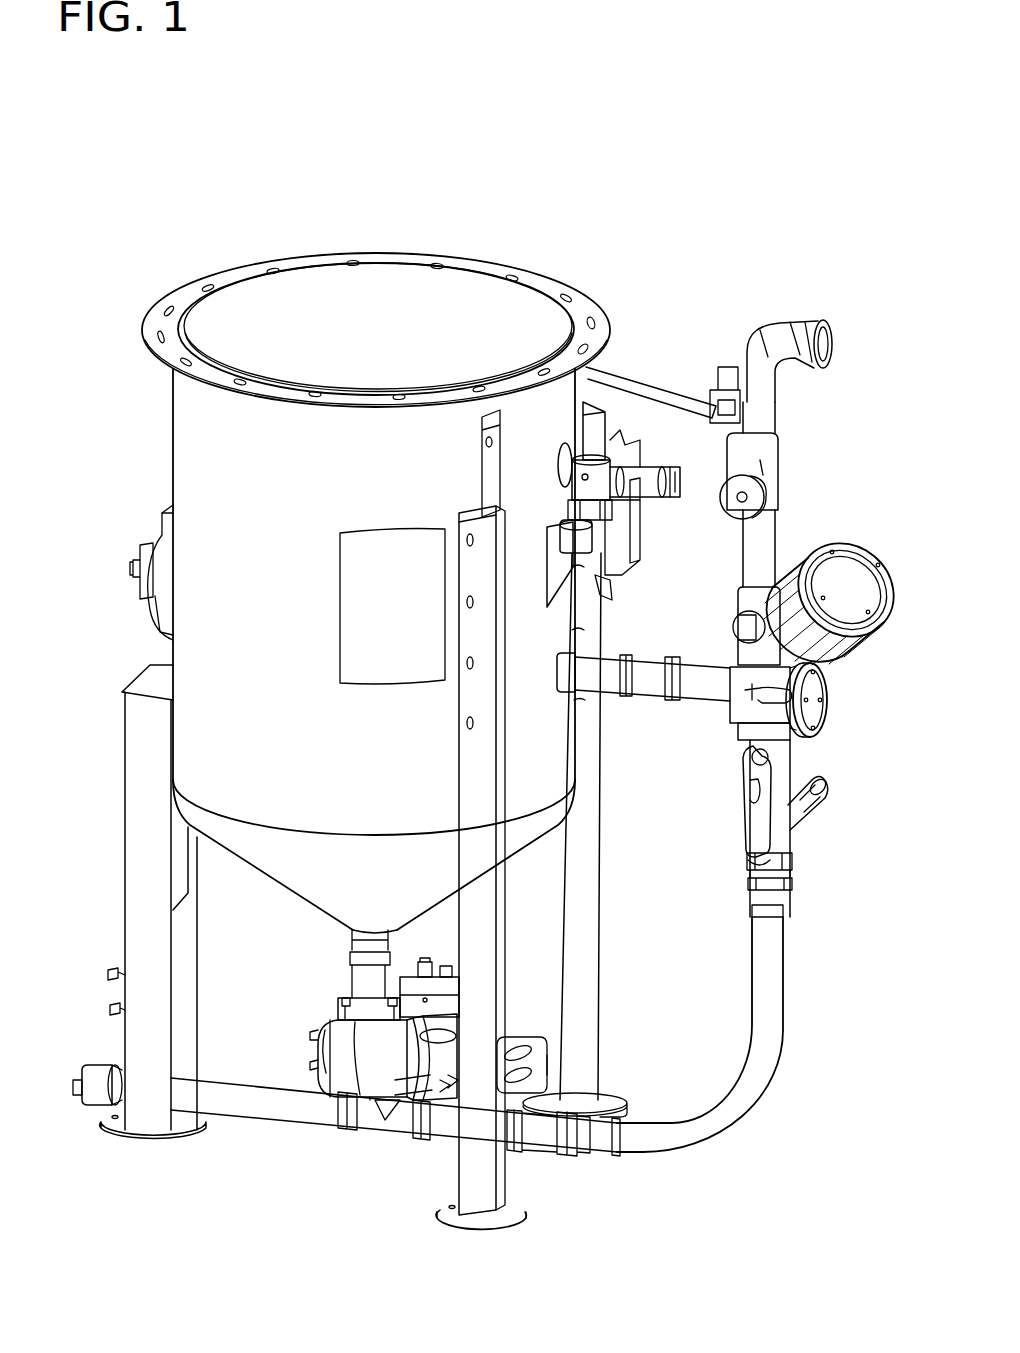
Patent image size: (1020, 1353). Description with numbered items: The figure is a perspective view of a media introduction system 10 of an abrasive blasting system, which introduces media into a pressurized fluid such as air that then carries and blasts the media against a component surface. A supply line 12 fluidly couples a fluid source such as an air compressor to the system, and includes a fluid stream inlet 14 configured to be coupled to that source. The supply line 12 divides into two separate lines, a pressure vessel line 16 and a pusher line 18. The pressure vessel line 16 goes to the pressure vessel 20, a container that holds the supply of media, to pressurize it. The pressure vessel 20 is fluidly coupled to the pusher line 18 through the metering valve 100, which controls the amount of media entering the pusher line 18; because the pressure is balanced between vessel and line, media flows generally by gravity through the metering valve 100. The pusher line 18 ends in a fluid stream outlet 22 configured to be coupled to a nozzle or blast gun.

The media introduction system 10 is at (782, 178).
The pressure vessel 20 is at (242, 265).
The fluid stream inlet 14 is at (830, 327).
The supply line 12 is at (775, 542).
The pressure vessel line 16 is at (708, 692).
The pusher line 18 is at (775, 1003).
The fluid stream outlet 22 is at (88, 1062).
The metering valve 100 is at (338, 1083).